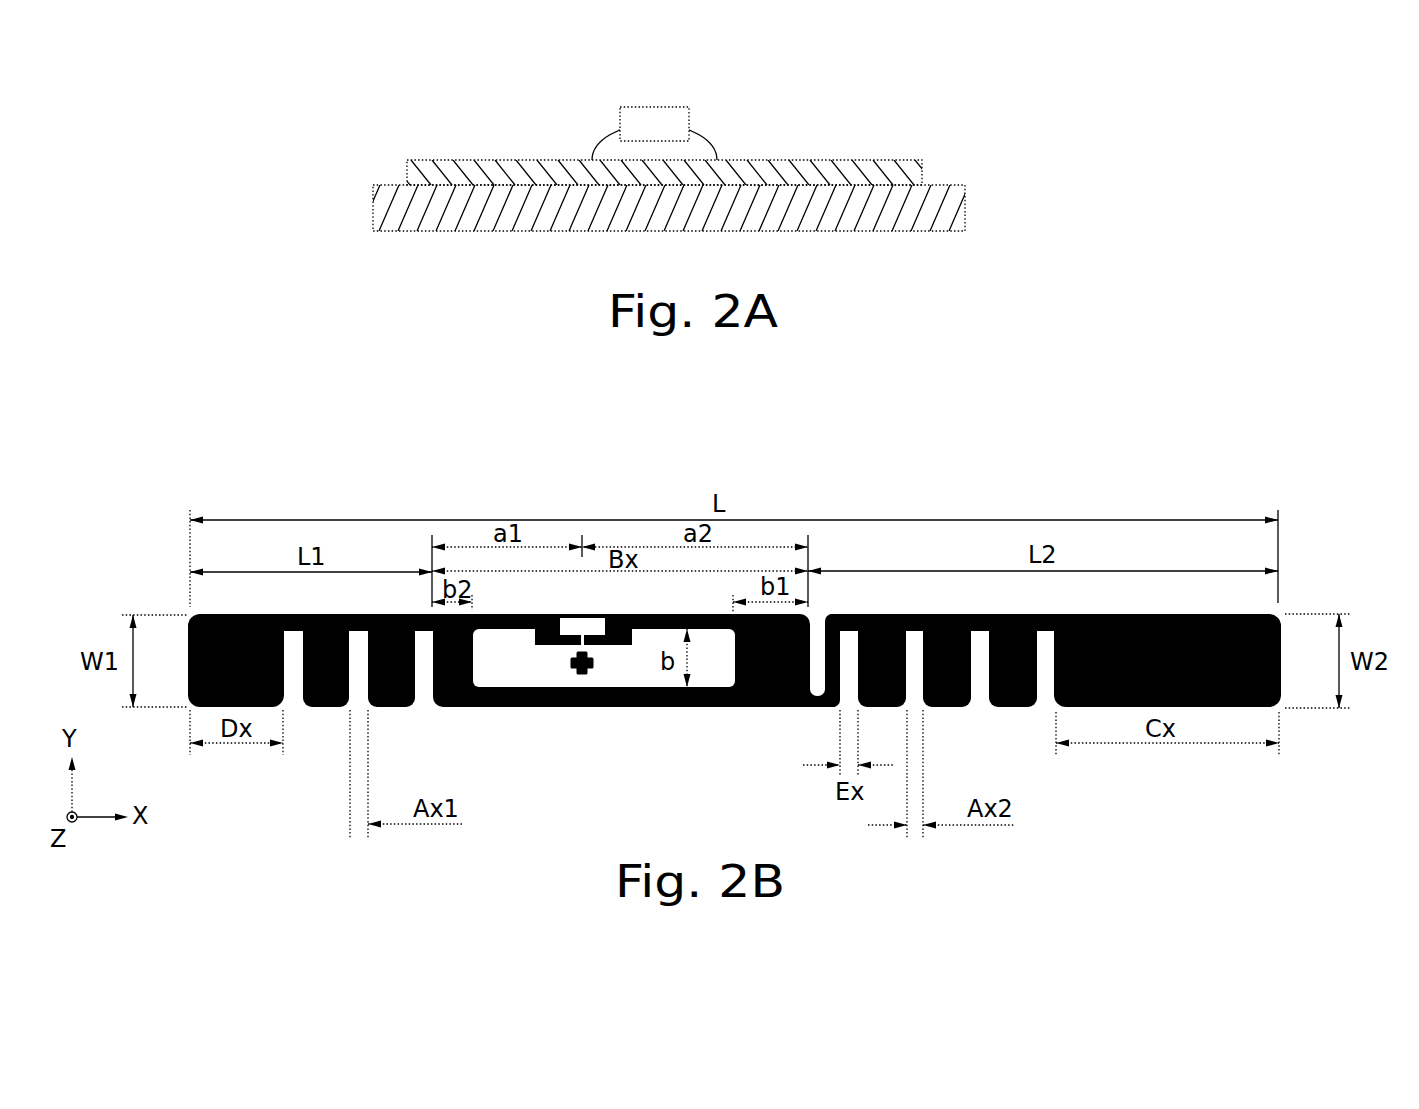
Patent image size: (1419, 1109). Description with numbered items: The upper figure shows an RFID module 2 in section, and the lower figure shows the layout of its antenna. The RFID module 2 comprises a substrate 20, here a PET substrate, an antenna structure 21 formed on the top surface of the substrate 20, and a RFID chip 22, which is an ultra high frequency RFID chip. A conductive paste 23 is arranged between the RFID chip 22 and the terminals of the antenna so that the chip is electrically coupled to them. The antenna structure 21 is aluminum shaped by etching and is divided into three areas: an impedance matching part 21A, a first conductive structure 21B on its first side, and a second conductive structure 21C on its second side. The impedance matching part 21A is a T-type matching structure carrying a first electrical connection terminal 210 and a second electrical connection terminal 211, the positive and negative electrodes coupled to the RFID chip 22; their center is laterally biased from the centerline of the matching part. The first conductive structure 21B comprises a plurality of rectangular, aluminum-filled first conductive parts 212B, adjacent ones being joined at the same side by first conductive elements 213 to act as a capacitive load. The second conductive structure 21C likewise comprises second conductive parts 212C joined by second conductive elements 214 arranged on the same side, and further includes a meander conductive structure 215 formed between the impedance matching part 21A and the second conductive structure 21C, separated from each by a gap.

In FIG. 2A, the RFID module 2 is at (693, 135).
In FIG. 2A, the substrate 20 is at (957, 212).
In FIG. 2A, the antenna structure 21 is at (920, 170).
In FIG. 2B, the antenna structure 21 is at (702, 602).
In FIG. 2A, the RFID chip 22 is at (678, 119).
In FIG. 2A, the conductive paste 23 is at (703, 152).
In FIG. 2B, the impedance matching part 21A is at (596, 720).
In FIG. 2B, the first conductive structure 21B is at (328, 720).
In FIG. 2B, the second conductive structure 21C is at (997, 720).
In FIG. 2B, the first electrical connection terminal 210 is at (578, 617).
In FIG. 2B, the second electrical connection terminal 211 is at (592, 617).
In FIG. 2B, the first conductive part 212B is at (402, 707).
In FIG. 2B, the second conductive part 212C is at (960, 613).
In FIG. 2B, the first conductive element 213 is at (430, 614).
In FIG. 2B, the second conductive element 214 is at (1050, 615).
In FIG. 2B, the meander conductive structure 215 is at (808, 708).